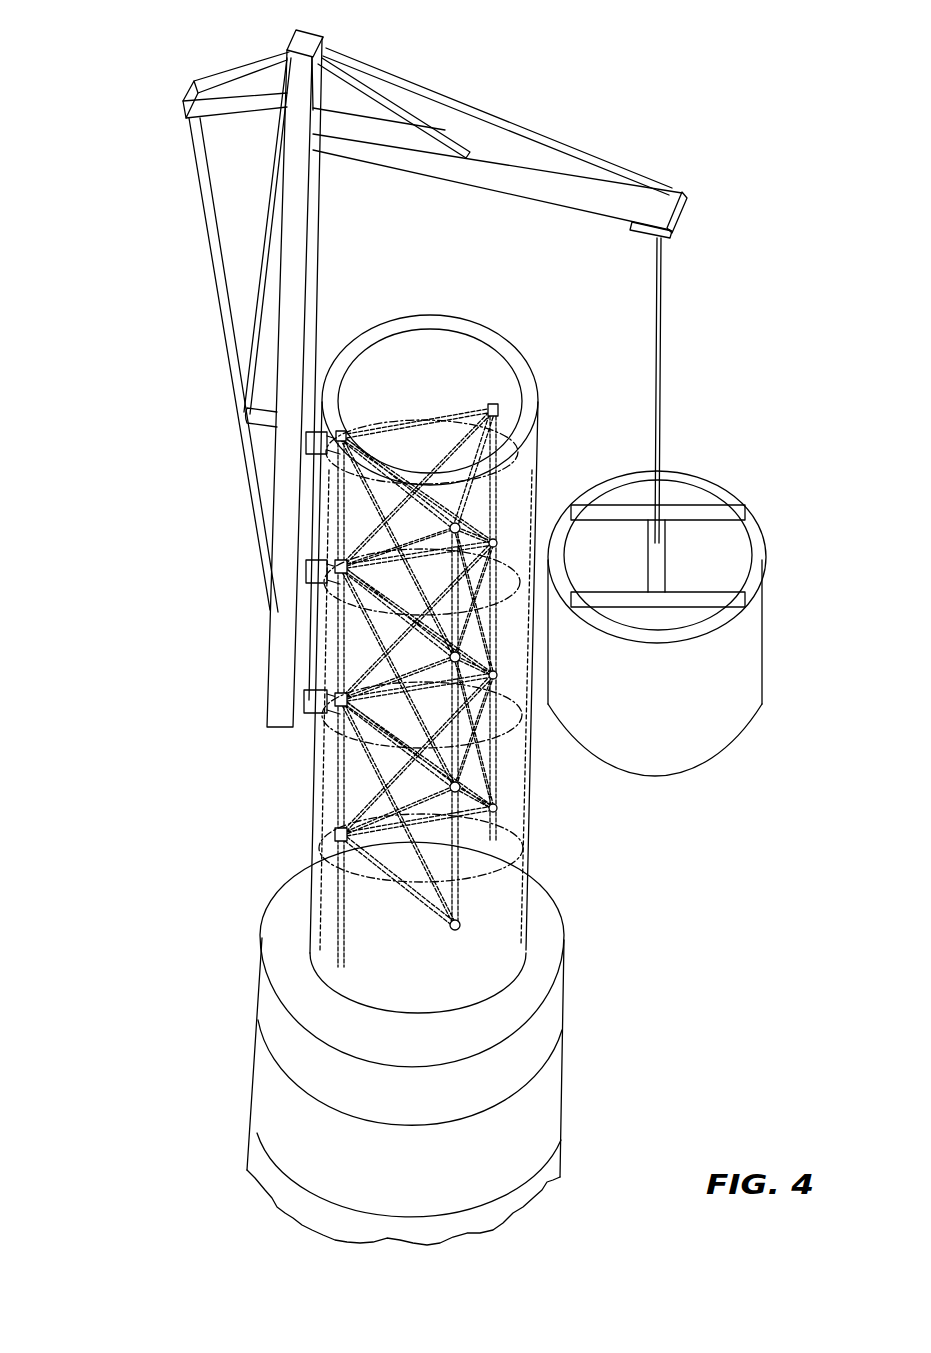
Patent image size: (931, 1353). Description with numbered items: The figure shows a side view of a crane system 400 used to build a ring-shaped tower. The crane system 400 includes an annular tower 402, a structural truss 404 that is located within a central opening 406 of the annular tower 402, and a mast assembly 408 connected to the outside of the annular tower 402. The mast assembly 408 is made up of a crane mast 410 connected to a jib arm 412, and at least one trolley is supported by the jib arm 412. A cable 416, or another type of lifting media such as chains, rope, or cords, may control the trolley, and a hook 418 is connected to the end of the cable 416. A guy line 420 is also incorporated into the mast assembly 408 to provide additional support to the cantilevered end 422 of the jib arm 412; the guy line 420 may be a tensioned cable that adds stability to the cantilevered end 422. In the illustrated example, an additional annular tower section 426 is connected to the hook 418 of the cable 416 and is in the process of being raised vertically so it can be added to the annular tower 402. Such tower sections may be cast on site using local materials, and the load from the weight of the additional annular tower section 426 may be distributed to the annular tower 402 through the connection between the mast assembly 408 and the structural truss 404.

The crane system 400 is at (130, 113).
The annular tower 402 is at (650, 948).
The structural truss 404 is at (430, 412).
The central opening 406 is at (402, 314).
The mast assembly 408 is at (198, 412).
The crane mast 410 is at (262, 705).
The jib arm 412 is at (502, 195).
The cable 416 is at (668, 345).
The hook 418 is at (676, 452).
The guy line 420 is at (423, 76).
The cantilevered end 422 is at (607, 145).
The additional annular tower section 426 is at (750, 742).